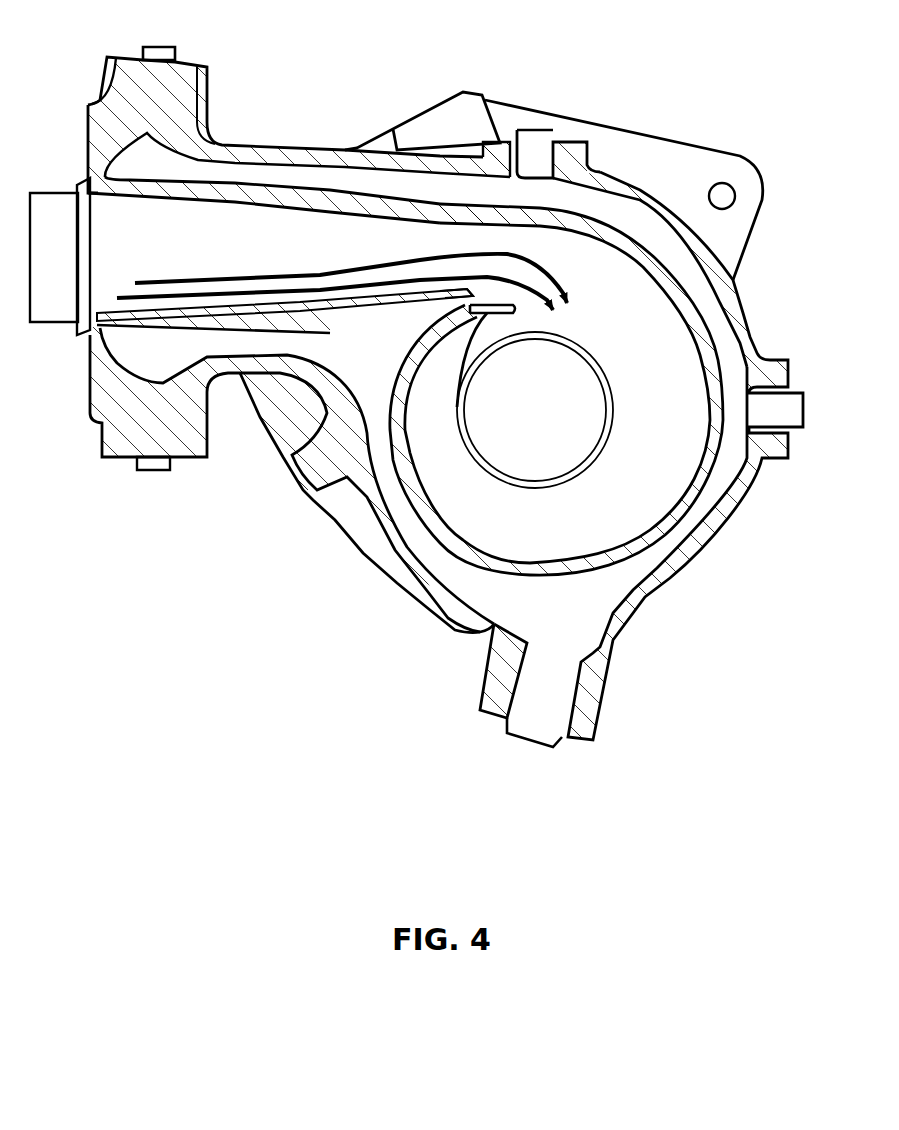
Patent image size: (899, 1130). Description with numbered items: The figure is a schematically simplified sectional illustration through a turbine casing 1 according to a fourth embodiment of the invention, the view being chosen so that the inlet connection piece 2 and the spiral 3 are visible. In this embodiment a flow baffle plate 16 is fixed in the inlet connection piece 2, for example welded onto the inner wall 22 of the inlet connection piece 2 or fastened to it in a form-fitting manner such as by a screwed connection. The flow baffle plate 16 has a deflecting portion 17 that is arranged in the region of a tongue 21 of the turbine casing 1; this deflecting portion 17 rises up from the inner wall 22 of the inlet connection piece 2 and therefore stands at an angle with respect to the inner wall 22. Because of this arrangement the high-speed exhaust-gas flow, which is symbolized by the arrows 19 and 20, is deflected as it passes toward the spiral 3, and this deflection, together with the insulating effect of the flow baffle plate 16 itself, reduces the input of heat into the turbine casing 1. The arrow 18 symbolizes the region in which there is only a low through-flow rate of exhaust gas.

The turbine casing 1 is at (690, 110).
The inlet connection piece 2 is at (232, 128).
The spiral 3 is at (670, 370).
The flow baffle plate 16 is at (332, 316).
The deflecting portion 17 is at (450, 290).
The arrow 18 is at (487, 313).
The arrow 19 is at (340, 270).
The arrow 20 is at (275, 292).
The tongue 21 is at (503, 312).
The inner wall 22 is at (490, 300).